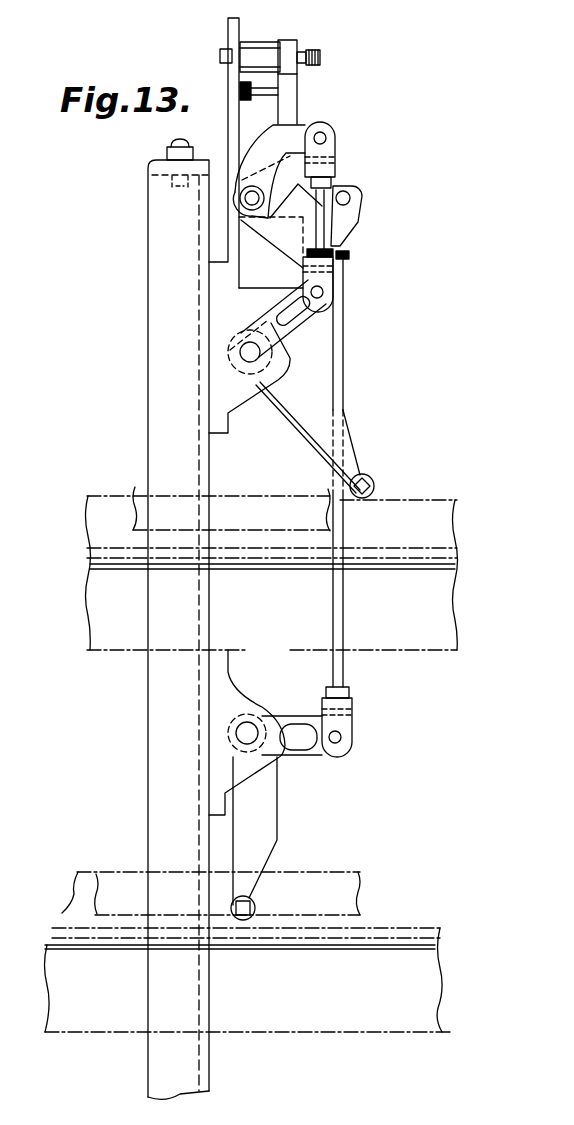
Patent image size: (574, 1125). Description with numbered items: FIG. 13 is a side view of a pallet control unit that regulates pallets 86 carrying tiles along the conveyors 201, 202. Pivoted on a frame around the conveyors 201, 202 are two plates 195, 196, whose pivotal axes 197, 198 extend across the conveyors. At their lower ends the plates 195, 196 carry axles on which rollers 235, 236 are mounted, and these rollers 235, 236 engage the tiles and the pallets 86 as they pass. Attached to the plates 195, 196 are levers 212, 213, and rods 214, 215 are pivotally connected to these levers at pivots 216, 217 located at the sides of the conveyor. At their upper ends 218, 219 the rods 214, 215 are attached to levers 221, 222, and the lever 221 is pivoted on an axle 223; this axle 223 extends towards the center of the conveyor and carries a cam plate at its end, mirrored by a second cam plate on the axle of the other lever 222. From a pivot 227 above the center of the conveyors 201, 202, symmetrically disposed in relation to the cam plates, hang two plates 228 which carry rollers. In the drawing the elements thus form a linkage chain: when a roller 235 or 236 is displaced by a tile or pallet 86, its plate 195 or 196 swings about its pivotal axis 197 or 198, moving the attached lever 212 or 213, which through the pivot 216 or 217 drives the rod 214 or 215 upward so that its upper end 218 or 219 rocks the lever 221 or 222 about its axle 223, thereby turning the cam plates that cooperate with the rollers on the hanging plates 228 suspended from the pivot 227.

The pallet 86 is at (436, 523).
The plate 195 is at (293, 400).
The plate 196 is at (237, 833).
The pivotal axis 197 is at (241, 342).
The pivotal axis 198 is at (245, 722).
The conveyor 201 is at (397, 557).
The conveyor 202 is at (368, 937).
The lever 212 is at (302, 318).
The lever 213 is at (300, 743).
The rod 214 is at (322, 230).
The rod 215 is at (343, 385).
The pivotal connection 216 is at (325, 292).
The pivotal connection 217 is at (342, 738).
The upper end of rod 218 is at (326, 139).
The upper end of rod 219 is at (350, 199).
The lever 221 is at (258, 139).
The lever 222 is at (333, 181).
The axle 223 is at (240, 199).
The pivot 227 is at (322, 60).
The plate 228 is at (282, 112).
The roller 235 is at (375, 484).
The roller 236 is at (258, 904).